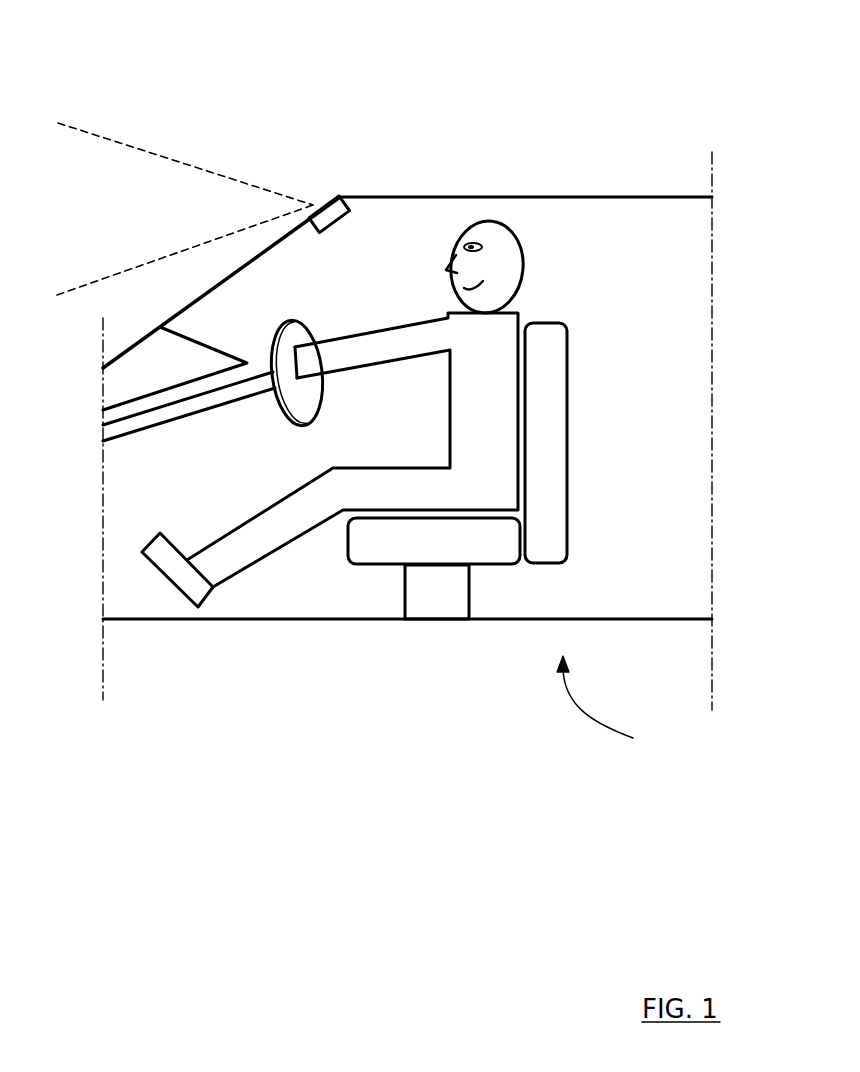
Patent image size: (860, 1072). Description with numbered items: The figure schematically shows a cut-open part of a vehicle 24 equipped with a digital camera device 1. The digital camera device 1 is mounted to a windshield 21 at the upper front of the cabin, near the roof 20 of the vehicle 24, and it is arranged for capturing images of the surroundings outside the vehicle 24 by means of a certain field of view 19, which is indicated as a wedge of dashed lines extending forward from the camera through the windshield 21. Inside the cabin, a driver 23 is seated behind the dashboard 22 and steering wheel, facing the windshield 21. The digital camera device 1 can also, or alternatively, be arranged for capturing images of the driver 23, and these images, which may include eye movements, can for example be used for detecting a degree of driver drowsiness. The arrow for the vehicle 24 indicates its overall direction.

The digital camera device 1 is at (328, 216).
The field of view 19 is at (150, 152).
The vehicle roof 20 is at (590, 197).
The windshield 21 is at (223, 275).
The dashboard 22 is at (200, 345).
The driver 23 is at (495, 402).
The vehicle 24 is at (612, 710).